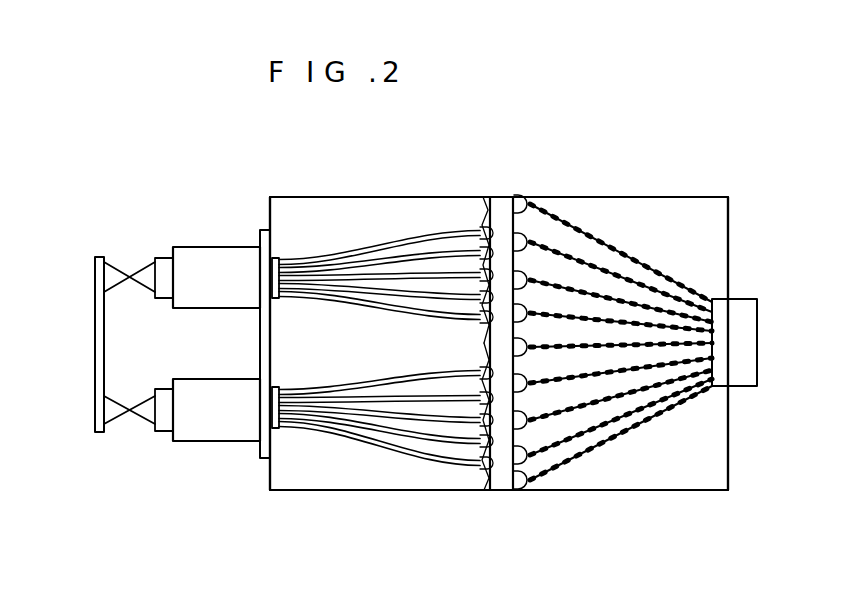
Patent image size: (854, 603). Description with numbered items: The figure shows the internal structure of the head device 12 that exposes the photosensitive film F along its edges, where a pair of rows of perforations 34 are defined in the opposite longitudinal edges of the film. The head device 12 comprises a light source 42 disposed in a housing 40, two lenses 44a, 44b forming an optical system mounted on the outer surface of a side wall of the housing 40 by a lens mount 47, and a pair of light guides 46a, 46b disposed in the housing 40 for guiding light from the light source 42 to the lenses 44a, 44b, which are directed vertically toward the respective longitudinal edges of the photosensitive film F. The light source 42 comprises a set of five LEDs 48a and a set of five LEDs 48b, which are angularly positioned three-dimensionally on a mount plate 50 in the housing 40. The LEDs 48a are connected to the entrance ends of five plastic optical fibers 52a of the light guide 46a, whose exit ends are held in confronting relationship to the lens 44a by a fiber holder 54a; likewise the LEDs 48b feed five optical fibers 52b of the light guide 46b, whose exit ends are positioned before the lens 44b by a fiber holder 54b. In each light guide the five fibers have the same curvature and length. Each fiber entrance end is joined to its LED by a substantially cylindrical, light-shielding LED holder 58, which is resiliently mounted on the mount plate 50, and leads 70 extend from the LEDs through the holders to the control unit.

The head device 12 is at (582, 109).
The photosensitive film F is at (94, 326).
The perforations 34 is at (95, 268).
The housing 40 is at (732, 225).
The light source 42 is at (576, 482).
The lens 44a is at (212, 262).
The lens 44b is at (202, 432).
The light guide 46a is at (352, 220).
The light guide 46b is at (376, 486).
The lens mount 47 is at (265, 231).
The LEDs 48a is at (482, 220).
The LEDs 48b is at (485, 492).
The mount plate 50 is at (508, 198).
The optical fibers 52a is at (388, 250).
The optical fibers 52b is at (366, 402).
The fiber holder 54a is at (277, 298).
The fiber holder 54b is at (277, 430).
The LED holder 58 is at (471, 315).
The leads 70 is at (645, 281).